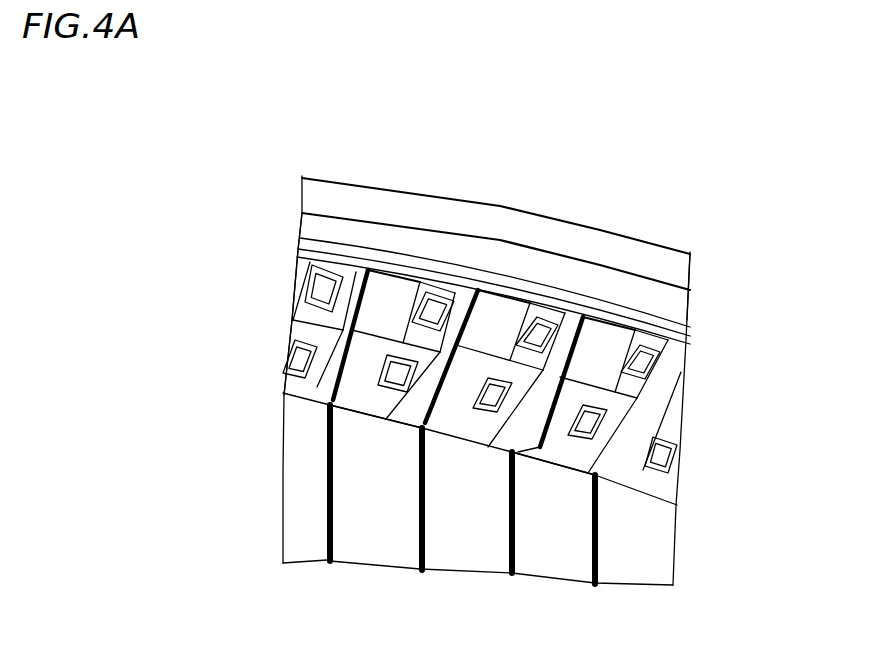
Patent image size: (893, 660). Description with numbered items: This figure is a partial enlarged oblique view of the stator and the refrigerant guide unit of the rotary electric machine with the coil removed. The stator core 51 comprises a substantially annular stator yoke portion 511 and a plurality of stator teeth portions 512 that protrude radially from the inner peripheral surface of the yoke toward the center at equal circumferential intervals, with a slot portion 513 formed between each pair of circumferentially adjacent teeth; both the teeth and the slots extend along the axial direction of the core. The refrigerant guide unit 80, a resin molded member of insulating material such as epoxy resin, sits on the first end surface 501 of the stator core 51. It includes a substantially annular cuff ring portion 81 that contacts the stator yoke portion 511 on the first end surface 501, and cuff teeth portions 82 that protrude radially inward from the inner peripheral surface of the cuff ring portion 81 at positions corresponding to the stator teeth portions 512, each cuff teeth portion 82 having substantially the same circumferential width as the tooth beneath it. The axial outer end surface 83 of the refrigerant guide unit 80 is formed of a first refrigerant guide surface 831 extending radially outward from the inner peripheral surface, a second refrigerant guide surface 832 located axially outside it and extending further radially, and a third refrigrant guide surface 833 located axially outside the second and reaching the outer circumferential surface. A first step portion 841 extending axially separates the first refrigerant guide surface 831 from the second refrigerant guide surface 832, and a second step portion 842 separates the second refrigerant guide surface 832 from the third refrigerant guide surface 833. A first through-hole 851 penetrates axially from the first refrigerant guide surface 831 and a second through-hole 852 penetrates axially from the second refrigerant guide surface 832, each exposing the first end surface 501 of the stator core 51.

The stator core 51 is at (567, 207).
The stator yoke portion 511 is at (691, 253).
The stator teeth portion 512 is at (390, 568).
The slot portion 513 is at (368, 270).
The first end surface 501 is at (478, 212).
The refrigerant guide unit 80 is at (310, 245).
The cuff ring portion 81 is at (400, 237).
The cuff teeth portion 82 is at (660, 357).
The axial outer end surface 83 is at (300, 312).
The first refrigerant guide surface 831 is at (332, 462).
The second refrigerant guide surface 832 is at (433, 284).
The third refrigerant guide surface 833 is at (690, 257).
The first step portion 841 is at (418, 284).
The second step portion 842 is at (657, 336).
The first through-hole 851 is at (296, 344).
The second through-hole 852 is at (320, 292).